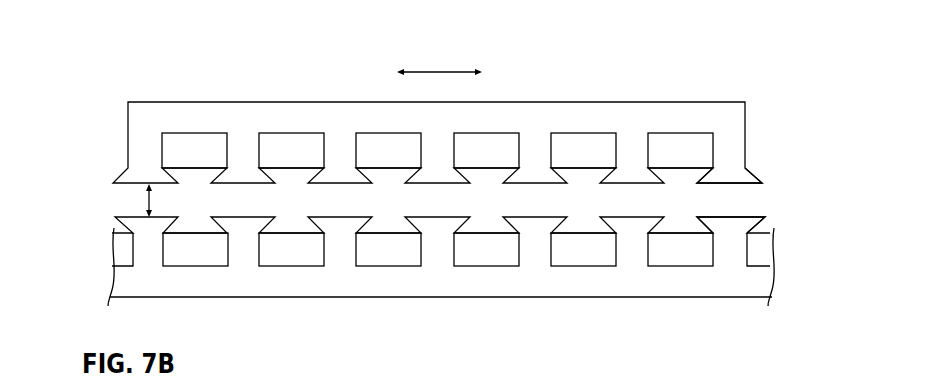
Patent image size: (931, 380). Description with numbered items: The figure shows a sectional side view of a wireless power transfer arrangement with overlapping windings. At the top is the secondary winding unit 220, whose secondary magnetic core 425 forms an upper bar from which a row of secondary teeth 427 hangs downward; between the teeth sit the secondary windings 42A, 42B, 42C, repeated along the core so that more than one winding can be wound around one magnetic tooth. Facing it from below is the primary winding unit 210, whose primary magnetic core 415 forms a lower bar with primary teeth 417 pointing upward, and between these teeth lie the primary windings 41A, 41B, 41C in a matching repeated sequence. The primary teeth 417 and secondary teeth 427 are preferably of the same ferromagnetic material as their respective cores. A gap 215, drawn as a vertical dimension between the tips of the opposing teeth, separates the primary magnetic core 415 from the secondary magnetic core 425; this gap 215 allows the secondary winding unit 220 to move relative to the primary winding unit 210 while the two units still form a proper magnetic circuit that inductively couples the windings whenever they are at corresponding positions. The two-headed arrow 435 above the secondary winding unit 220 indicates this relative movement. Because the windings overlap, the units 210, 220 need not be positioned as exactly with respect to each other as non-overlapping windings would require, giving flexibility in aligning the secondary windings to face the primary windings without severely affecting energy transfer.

The secondary winding unit 220 is at (475, 93).
The primary winding unit 210 is at (479, 295).
The secondary magnetic core 425 is at (525, 111).
The primary magnetic core 415 is at (463, 290).
The secondary tooth 427 is at (770, 170).
The primary tooth 417 is at (773, 220).
The two-headed arrow 435 is at (442, 72).
The gap 215 is at (153, 203).
The secondary winding 42A is at (173, 161).
The secondary winding 42B is at (270, 161).
The secondary winding 42C is at (367, 161).
The primary winding 41A is at (174, 261).
The primary winding 41B is at (270, 261).
The primary winding 41C is at (367, 261).